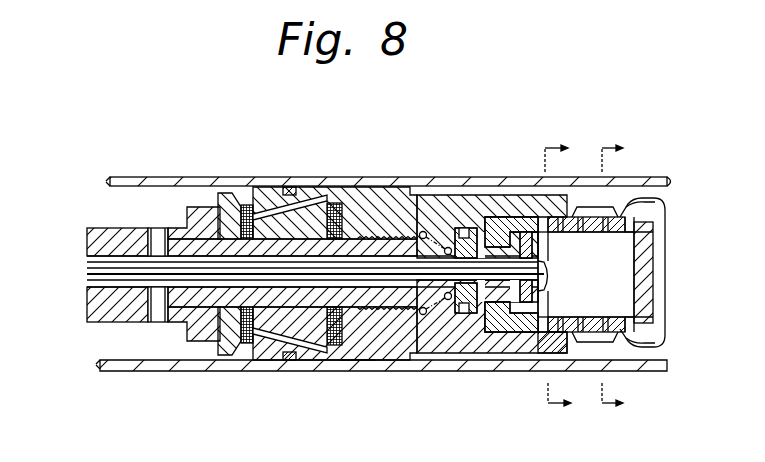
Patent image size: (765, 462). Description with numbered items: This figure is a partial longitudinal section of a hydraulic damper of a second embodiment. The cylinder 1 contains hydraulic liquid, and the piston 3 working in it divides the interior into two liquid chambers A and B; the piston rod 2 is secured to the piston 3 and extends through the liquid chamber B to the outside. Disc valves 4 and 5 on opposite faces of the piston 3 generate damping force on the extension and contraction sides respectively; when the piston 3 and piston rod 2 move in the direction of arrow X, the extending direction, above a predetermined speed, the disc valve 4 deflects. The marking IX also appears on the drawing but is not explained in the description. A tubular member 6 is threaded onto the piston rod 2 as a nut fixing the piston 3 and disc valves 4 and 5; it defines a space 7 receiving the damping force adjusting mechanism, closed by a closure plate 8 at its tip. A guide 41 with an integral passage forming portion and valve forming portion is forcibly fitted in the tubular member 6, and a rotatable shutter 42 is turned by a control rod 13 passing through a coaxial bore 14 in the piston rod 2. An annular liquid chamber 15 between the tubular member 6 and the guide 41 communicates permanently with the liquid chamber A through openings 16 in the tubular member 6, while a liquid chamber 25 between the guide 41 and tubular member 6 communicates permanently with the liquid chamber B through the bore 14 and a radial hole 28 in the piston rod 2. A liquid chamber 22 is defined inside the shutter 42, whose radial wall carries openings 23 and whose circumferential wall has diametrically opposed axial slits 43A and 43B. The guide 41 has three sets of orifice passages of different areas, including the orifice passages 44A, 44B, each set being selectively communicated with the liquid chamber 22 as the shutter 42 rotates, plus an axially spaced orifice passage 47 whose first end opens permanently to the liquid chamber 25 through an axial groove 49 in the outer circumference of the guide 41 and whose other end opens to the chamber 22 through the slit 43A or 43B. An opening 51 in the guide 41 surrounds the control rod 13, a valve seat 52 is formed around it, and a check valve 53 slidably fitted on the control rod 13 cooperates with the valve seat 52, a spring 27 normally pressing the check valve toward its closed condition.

The cylinder 1 is at (129, 178).
The piston rod 2 is at (91, 325).
The piston 3 is at (274, 355).
The disc valve 4 is at (325, 200).
The disc valve 5 is at (246, 205).
The tubular member 6 is at (387, 218).
The space 7 is at (459, 235).
The closure plate 8 is at (650, 290).
The control rod 13 is at (133, 322).
The coaxial bore 14 is at (175, 322).
The annular liquid chamber 15 is at (634, 352).
The openings 16 is at (635, 205).
The liquid chamber 22 is at (618, 270).
The openings 23 is at (539, 232).
The liquid chamber 25 is at (404, 335).
The spring 27 is at (358, 362).
The radial hole 28 is at (157, 228).
The guide 41 is at (497, 236).
The shutter 42 is at (514, 228).
The slit 43A is at (618, 240).
The slit 43B is at (617, 327).
The orifice passage 44A is at (597, 217).
The orifice passage 44B is at (588, 334).
The orifice passage 47 is at (548, 340).
The axially extending groove 49 is at (490, 334).
The opening 51 is at (440, 335).
The valve seat 52 is at (465, 332).
The check valve 53 is at (421, 232).
The liquid chamber A is at (653, 195).
The liquid chamber B is at (168, 198).
The arrow X is at (554, 125).
The section IX is at (617, 125).